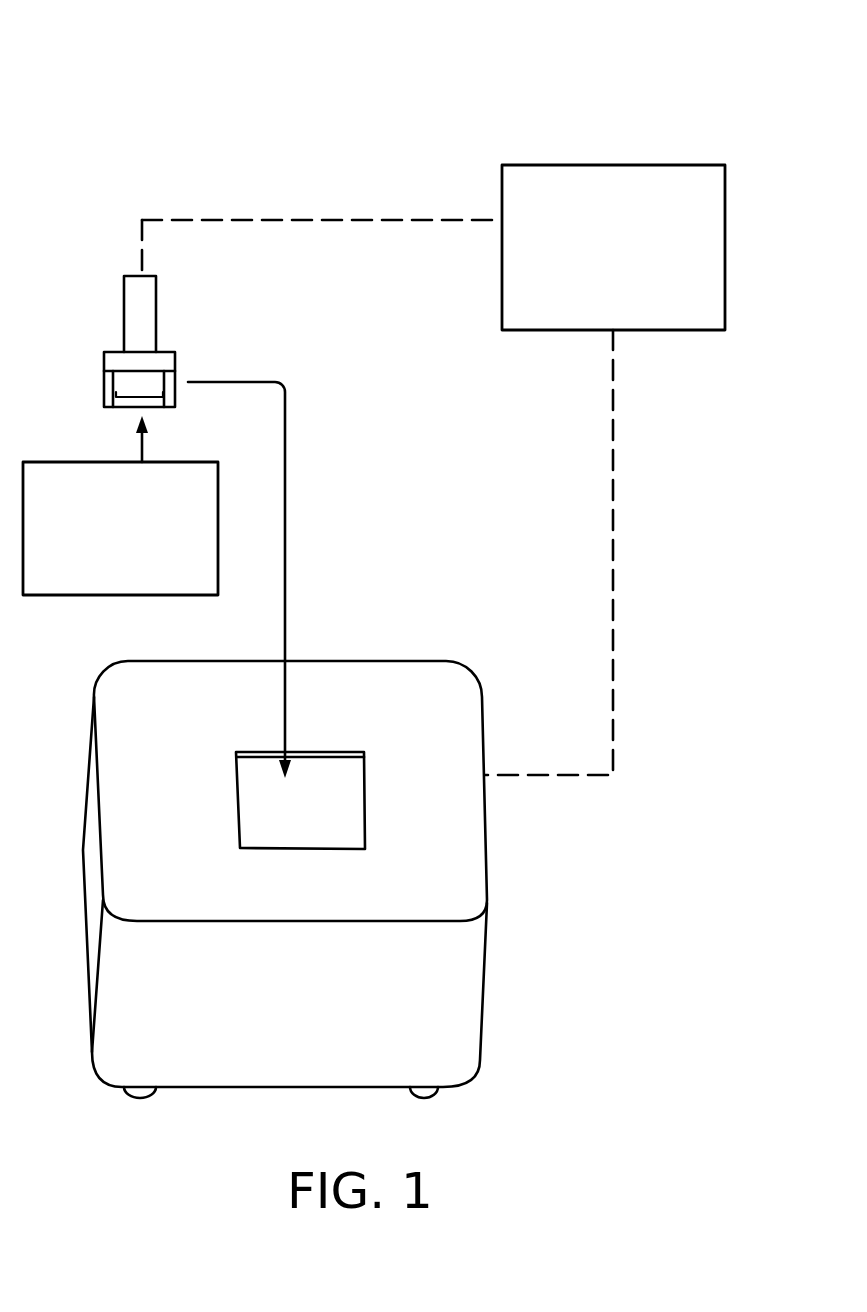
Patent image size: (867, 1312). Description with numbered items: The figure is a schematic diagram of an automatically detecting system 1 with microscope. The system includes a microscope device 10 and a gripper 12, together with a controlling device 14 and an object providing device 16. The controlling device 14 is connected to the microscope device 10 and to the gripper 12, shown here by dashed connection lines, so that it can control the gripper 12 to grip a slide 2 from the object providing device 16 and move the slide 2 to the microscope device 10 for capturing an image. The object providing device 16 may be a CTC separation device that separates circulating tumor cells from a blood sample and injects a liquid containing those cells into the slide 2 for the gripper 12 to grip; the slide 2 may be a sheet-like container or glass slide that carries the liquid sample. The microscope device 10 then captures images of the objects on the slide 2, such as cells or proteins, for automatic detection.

The automatically detecting system with microscope 1 is at (214, 86).
The slide 2 is at (138, 397).
The microscope device 10 is at (410, 661).
The gripper 12 is at (157, 317).
The controlling device 14 is at (548, 165).
The object providing device 16 is at (52, 462).